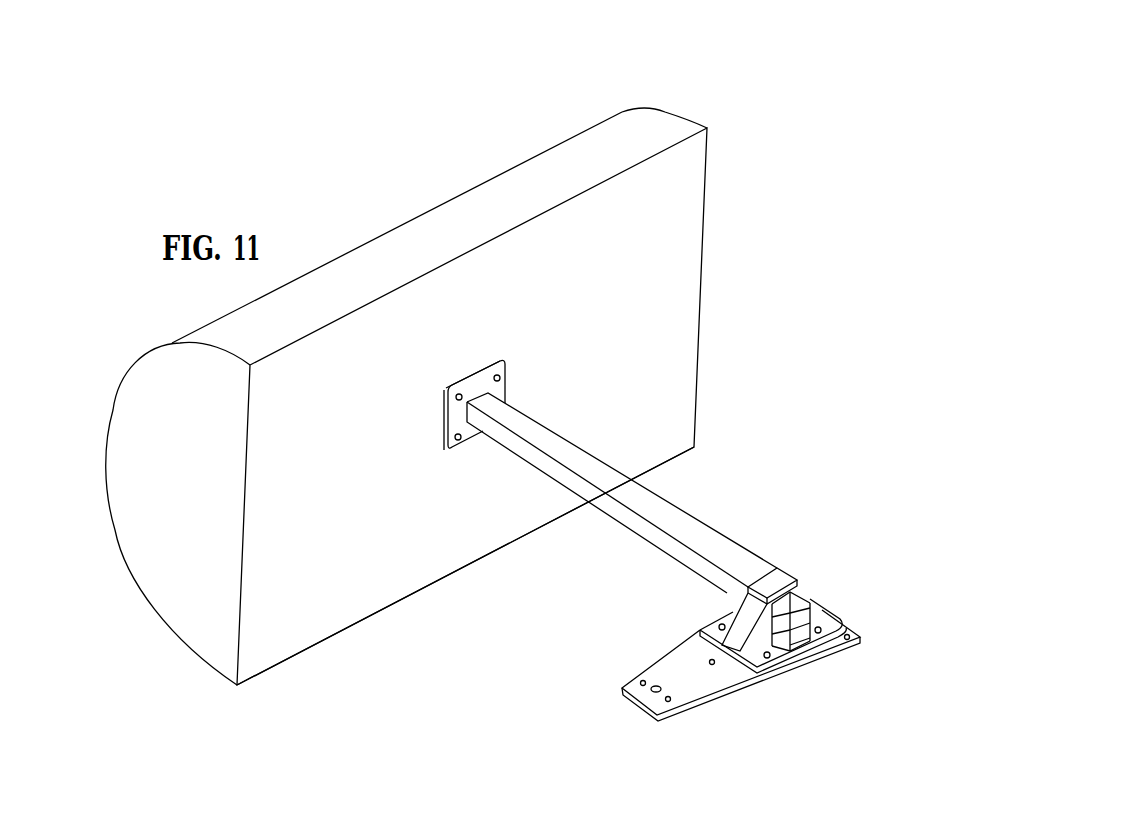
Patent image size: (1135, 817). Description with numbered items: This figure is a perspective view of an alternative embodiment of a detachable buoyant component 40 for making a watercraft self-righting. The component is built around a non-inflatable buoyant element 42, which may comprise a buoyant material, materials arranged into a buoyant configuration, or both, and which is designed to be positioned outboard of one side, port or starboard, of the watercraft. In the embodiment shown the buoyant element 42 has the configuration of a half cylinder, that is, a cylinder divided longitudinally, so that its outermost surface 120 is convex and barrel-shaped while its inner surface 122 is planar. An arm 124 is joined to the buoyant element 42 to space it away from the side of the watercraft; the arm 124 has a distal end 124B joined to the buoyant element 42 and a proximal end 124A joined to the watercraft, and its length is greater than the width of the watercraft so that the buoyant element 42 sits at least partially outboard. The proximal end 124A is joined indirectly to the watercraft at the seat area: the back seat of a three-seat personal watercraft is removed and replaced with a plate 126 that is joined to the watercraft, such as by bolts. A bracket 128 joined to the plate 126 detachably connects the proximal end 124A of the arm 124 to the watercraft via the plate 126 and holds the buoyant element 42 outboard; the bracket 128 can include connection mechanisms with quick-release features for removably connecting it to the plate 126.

The display assembly 40 is at (682, 95).
The buoyant element 42 is at (638, 235).
The outermost surface 120 is at (108, 432).
The inner surface 122 is at (303, 575).
The arm 124 is at (660, 513).
The proximal end 124A is at (795, 598).
The distal end 124B is at (505, 399).
The plate 126 is at (683, 670).
The bracket 128 is at (757, 637).